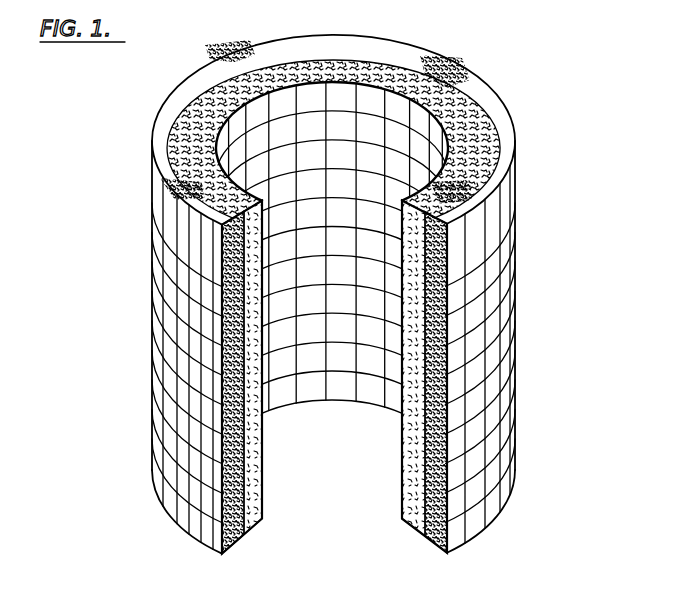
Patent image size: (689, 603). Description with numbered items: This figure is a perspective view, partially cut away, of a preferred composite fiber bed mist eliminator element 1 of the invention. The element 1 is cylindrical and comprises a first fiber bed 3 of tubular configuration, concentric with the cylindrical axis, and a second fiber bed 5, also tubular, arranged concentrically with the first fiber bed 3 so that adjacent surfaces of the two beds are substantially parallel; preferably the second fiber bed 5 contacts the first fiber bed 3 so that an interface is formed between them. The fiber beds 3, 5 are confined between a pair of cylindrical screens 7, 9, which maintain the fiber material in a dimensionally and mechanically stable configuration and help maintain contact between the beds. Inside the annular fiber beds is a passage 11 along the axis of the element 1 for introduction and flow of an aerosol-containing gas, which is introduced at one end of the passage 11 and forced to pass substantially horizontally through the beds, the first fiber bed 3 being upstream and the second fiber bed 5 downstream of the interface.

The composite fiber bed mist eliminator element 1 is at (543, 208).
The first fiber bed 3 is at (402, 517).
The second fiber bed 5 is at (438, 536).
The cylindrical screen 7 is at (330, 362).
The cylindrical screen 9 is at (493, 403).
The passage 11 is at (317, 176).